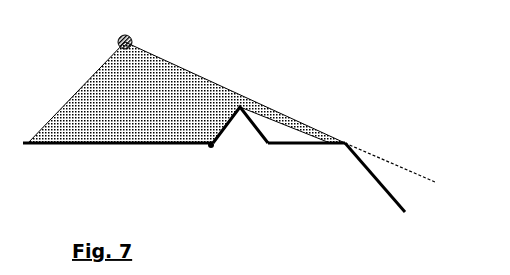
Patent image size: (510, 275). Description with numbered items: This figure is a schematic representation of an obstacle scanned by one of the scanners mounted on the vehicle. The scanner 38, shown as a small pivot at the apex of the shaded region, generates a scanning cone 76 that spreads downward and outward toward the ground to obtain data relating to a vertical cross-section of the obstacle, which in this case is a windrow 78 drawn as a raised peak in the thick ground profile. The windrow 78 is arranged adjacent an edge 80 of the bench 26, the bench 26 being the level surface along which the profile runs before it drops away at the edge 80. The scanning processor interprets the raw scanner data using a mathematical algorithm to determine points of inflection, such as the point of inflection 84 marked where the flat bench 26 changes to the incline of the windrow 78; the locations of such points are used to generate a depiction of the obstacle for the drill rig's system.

The bench 26 is at (160, 148).
The scanner 38 is at (131, 38).
The scanning cone 76 is at (68, 103).
The windrow 78 is at (250, 112).
The edge of the bench 80 is at (346, 142).
The point of inflection 84 is at (210, 148).